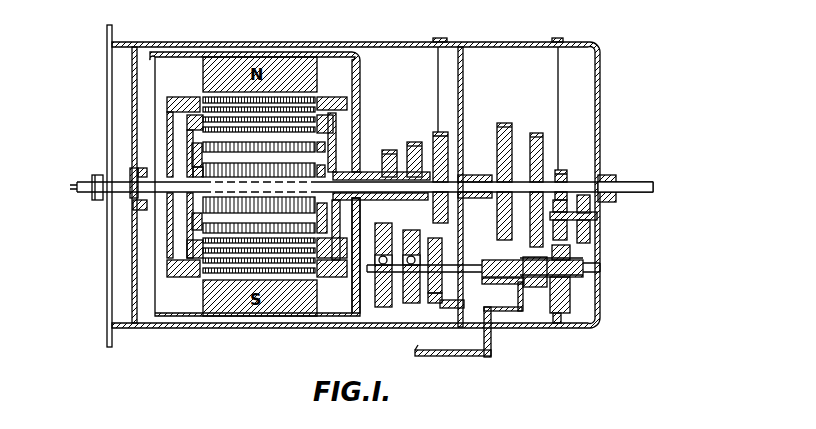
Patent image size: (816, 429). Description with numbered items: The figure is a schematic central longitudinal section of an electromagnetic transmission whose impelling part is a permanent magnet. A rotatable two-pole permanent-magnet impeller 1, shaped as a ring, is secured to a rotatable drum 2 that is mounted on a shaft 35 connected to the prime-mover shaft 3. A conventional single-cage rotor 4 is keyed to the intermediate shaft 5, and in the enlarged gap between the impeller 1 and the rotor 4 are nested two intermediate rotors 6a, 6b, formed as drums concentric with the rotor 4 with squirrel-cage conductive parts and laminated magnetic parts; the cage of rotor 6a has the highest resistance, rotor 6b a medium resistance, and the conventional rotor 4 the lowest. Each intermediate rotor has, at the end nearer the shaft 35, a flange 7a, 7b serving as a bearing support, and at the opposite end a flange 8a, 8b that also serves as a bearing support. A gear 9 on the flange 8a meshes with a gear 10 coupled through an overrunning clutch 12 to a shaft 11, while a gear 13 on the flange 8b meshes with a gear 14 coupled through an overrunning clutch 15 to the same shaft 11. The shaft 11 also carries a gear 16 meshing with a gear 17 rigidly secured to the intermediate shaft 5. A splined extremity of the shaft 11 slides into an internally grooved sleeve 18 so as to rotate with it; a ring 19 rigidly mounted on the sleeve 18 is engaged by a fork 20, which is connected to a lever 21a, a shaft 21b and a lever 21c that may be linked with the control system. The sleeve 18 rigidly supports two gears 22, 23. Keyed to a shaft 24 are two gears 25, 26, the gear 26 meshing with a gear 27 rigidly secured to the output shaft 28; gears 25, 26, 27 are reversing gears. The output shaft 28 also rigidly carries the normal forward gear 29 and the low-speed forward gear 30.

The permanent-magnet impeller 1 is at (236, 56).
The rotatable drum 2 is at (134, 73).
The prime-mover shaft 3 is at (86, 194).
The conventional single-cage rotor 4 is at (212, 204).
The intermediate shaft 5 is at (462, 175).
The intermediate rotor 6a is at (208, 100).
The intermediate rotor 6b is at (203, 123).
The flange 7a is at (167, 138).
The flange 7b is at (188, 152).
The flange 8a is at (347, 110).
The flange 8b is at (337, 138).
The gear 9 is at (390, 150).
The gear 10 is at (385, 306).
The shaft 11 is at (598, 262).
The overrunning clutch 12 is at (410, 304).
The gear 13 is at (415, 142).
The gear 14 is at (425, 322).
The overrunning clutch 15 is at (436, 294).
The gear 16 is at (466, 325).
The gear 17 is at (440, 132).
The internally grooved sleeve 18 is at (572, 282).
The ring 19 is at (502, 262).
The fork 20 is at (520, 283).
The lever 21a is at (503, 328).
The shaft 21b is at (492, 352).
The lever 21c is at (450, 358).
The gear 22 is at (532, 288).
The gear 23 is at (558, 285).
The shaft 24 is at (597, 216).
The gear 25 is at (585, 230).
The gear 26 is at (590, 240).
The gear 27 is at (562, 170).
The output shaft 28 is at (633, 185).
The normal forward gear 29 is at (537, 133).
The low-speed forward gear 30 is at (504, 123).
The shaft 35 is at (102, 200).